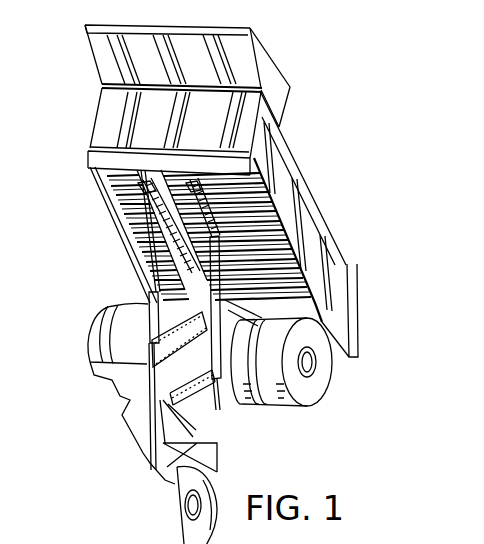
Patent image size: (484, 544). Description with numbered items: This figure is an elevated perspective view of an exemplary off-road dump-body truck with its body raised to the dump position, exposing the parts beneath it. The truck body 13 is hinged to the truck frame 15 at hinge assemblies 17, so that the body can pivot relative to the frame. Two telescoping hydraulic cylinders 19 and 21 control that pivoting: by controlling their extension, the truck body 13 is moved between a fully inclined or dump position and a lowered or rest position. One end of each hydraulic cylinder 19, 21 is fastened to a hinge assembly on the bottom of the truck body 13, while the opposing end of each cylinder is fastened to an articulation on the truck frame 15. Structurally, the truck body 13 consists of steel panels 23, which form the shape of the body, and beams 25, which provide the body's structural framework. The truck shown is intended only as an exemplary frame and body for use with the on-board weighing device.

The truck body 13 is at (312, 178).
The truck frame 15 is at (232, 393).
The hinge assemblies 17 is at (208, 272).
The telescoping hydraulic cylinder 19 is at (148, 297).
The telescoping hydraulic cylinder 21 is at (184, 392).
The steel panels 23 is at (110, 120).
The beams 25 is at (338, 288).